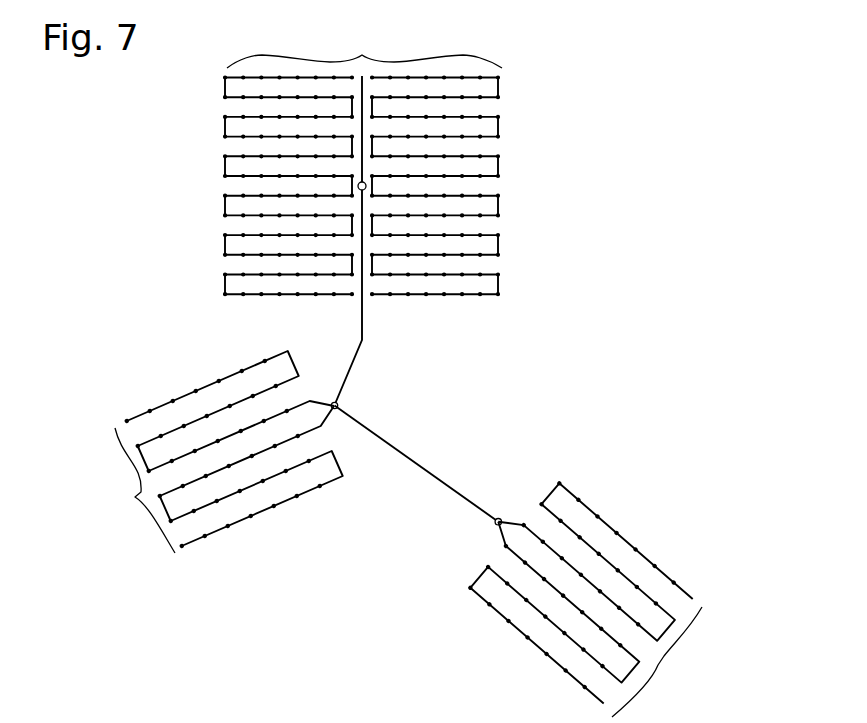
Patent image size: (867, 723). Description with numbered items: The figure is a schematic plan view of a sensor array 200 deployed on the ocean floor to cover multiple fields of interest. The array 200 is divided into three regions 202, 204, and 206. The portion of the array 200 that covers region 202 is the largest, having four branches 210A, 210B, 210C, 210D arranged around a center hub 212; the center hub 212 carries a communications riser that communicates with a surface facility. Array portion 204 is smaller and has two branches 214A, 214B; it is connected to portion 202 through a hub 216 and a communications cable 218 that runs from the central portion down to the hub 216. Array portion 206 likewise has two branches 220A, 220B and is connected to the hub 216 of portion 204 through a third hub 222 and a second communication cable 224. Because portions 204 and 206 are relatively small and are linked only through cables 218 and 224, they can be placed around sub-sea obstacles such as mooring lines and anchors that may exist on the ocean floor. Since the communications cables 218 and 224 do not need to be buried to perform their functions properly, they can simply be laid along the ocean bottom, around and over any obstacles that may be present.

The array 200 is at (640, 210).
The region 202 is at (362, 56).
The region 204 is at (135, 497).
The region 206 is at (660, 665).
The branch 210A is at (498, 88).
The branch 210B is at (498, 206).
The branch 210C is at (225, 87).
The branch 210D is at (225, 243).
The center hub 212 is at (366, 186).
The branch 214A is at (207, 387).
The branch 214B is at (265, 513).
The hub 216 is at (339, 407).
The communications cable 218 is at (362, 330).
The branch 220A is at (607, 522).
The branch 220B is at (515, 625).
The third hub 222 is at (500, 517).
The second communication cable 224 is at (410, 458).